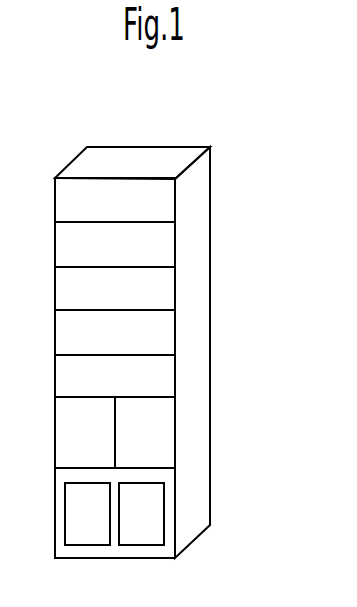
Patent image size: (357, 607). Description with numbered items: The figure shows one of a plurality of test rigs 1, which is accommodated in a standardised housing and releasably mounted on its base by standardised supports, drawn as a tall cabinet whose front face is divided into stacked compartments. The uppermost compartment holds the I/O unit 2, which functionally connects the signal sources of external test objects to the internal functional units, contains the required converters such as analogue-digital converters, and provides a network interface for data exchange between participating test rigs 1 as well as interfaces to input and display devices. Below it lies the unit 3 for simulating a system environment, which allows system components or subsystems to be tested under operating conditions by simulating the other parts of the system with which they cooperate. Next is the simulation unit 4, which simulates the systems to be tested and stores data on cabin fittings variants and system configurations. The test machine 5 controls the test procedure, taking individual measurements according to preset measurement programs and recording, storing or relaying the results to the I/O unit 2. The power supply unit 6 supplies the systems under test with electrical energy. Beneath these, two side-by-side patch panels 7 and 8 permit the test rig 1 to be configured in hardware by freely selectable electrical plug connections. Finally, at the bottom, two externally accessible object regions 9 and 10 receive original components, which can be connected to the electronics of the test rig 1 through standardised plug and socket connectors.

The test rig 1 is at (190, 115).
The I/O unit 2 is at (110, 214).
The unit for simulating a system environment 3 is at (110, 256).
The simulation unit 4 is at (110, 302).
The test machine 5 is at (110, 346).
The power supply unit 6 is at (110, 386).
The patch panel 7 is at (76, 448).
The patch panel 8 is at (137, 448).
The object region 9 is at (80, 524).
The object region 10 is at (150, 524).